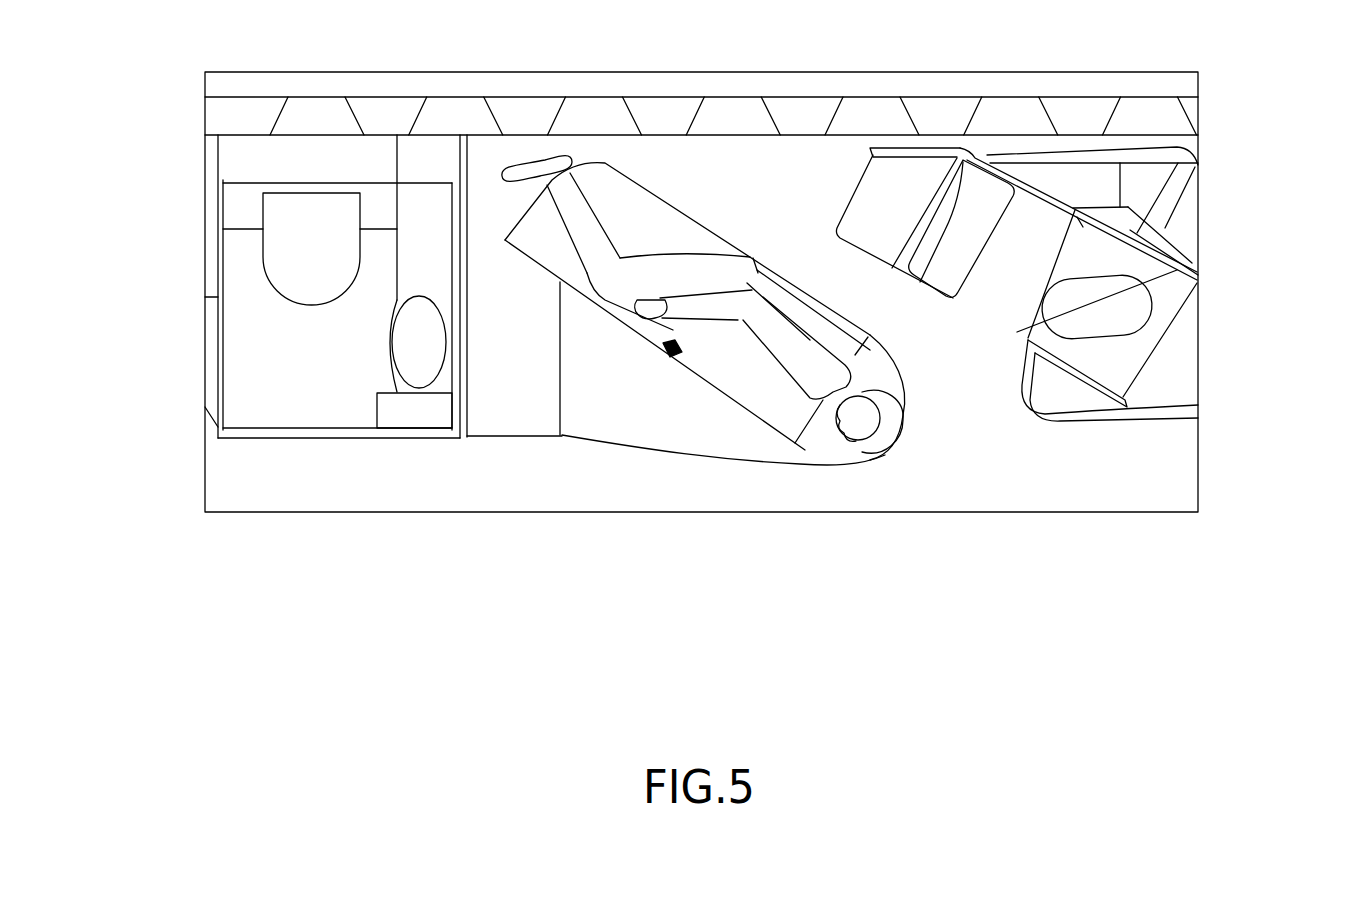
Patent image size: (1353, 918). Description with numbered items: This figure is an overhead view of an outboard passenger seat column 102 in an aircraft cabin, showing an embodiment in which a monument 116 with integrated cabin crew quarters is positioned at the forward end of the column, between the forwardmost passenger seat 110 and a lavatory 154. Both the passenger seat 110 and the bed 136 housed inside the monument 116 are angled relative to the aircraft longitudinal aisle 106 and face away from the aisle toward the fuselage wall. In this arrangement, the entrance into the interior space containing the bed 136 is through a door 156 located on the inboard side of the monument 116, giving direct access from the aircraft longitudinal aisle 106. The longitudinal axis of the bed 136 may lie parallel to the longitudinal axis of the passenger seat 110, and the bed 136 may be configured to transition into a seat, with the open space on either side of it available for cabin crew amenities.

The outboard passenger seat column 102 is at (1208, 135).
The aircraft longitudinal aisle 106 is at (590, 462).
The passenger seat 110 is at (1034, 210).
The monument 116 is at (838, 462).
The bed 136 is at (596, 185).
The lavatory 154 is at (243, 278).
The door 156 is at (708, 457).